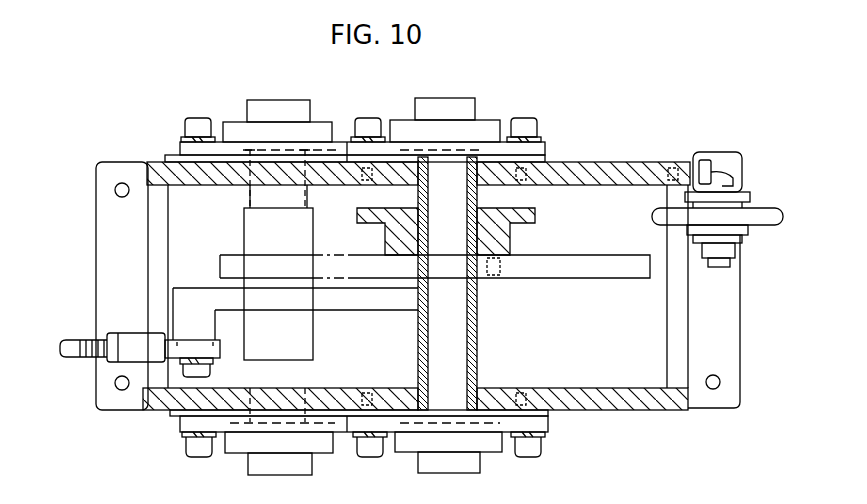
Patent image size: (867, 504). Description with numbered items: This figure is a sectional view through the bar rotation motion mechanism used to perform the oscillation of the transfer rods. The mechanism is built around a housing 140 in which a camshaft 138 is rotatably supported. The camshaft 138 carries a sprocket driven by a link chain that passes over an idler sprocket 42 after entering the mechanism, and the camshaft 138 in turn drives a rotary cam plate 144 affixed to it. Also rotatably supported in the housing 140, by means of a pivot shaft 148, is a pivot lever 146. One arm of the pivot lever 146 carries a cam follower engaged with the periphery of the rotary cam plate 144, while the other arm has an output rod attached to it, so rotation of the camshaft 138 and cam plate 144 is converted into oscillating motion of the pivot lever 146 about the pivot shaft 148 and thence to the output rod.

The idler sprocket 42 is at (767, 217).
The camshaft 138 is at (448, 196).
The housing 140 is at (638, 410).
The rotary cam plate 144 is at (535, 278).
The pivot lever 146 is at (350, 304).
The pivot shaft 148 is at (288, 378).